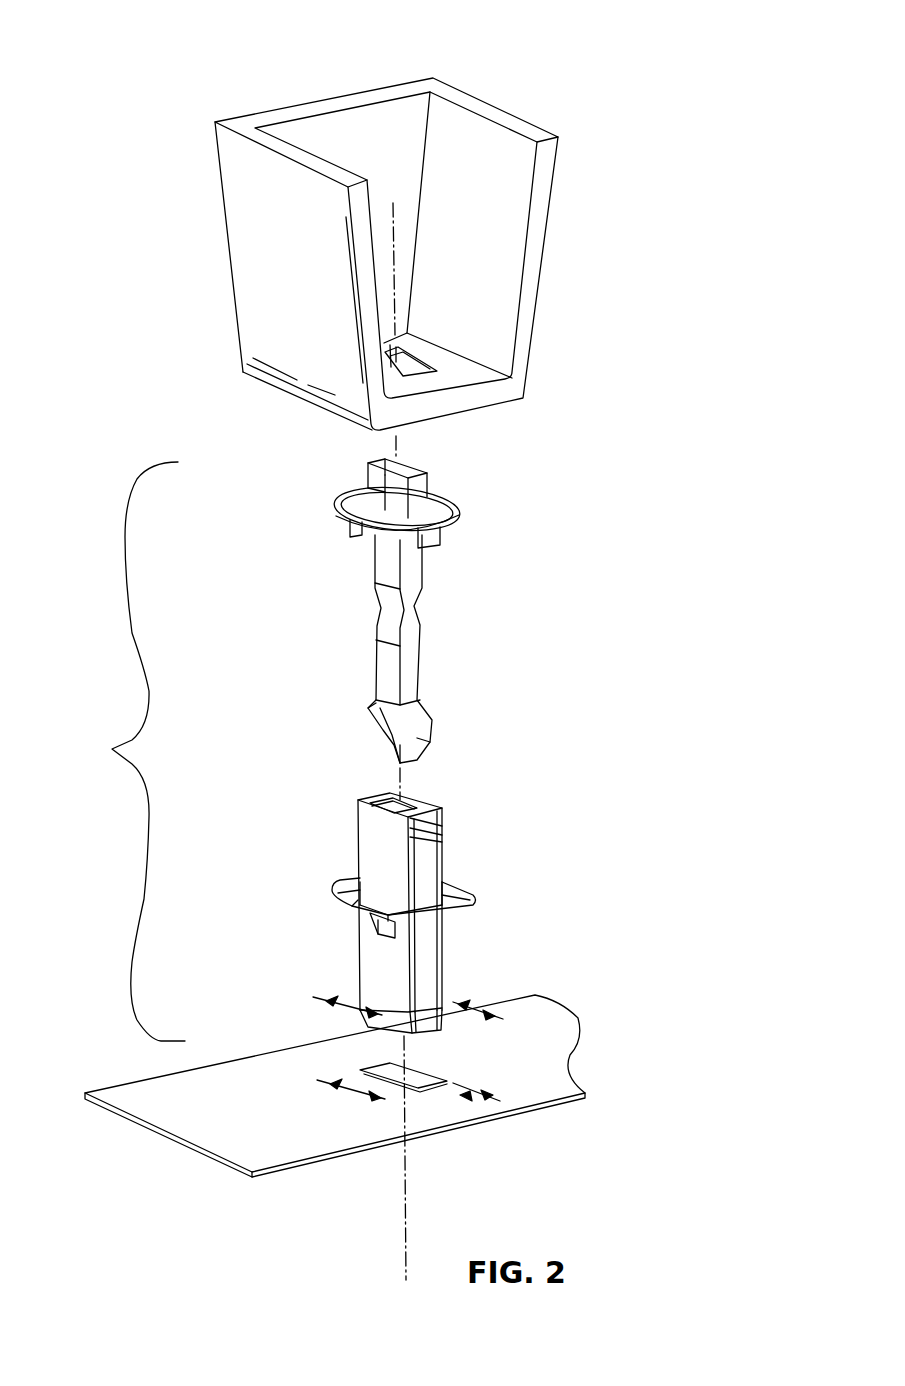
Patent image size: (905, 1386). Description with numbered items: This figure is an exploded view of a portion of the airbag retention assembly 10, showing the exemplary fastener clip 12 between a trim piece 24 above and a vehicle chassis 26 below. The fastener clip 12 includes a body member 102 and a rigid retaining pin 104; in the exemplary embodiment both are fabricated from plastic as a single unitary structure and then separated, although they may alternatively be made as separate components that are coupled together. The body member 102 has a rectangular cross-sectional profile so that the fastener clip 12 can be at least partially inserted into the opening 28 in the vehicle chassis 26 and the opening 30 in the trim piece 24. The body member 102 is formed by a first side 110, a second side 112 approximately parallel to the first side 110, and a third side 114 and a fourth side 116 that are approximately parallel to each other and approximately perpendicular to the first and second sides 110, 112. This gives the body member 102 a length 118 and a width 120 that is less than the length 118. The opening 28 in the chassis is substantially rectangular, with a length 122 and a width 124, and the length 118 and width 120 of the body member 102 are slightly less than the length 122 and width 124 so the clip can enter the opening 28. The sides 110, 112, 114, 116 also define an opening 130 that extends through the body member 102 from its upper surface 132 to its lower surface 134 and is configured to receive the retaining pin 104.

The airbag retention assembly 10 is at (617, 92).
The fastener clip 12 is at (112, 749).
The trim piece 24 is at (535, 233).
The vehicle chassis 26 is at (577, 1023).
The opening 28 is at (430, 1083).
The opening 30 is at (400, 352).
The body member 102 is at (382, 904).
The retaining pin 104 is at (423, 668).
The first side 110 is at (373, 963).
The second side 112 is at (437, 958).
The third side 114 is at (433, 990).
The fourth side 116 is at (357, 923).
The length 118 is at (354, 1004).
The width 120 is at (477, 1017).
The length 122 is at (355, 1090).
The width 124 is at (480, 1102).
The opening 130 is at (403, 800).
The upper surface 132 is at (370, 800).
The lower surface 134 is at (370, 1042).